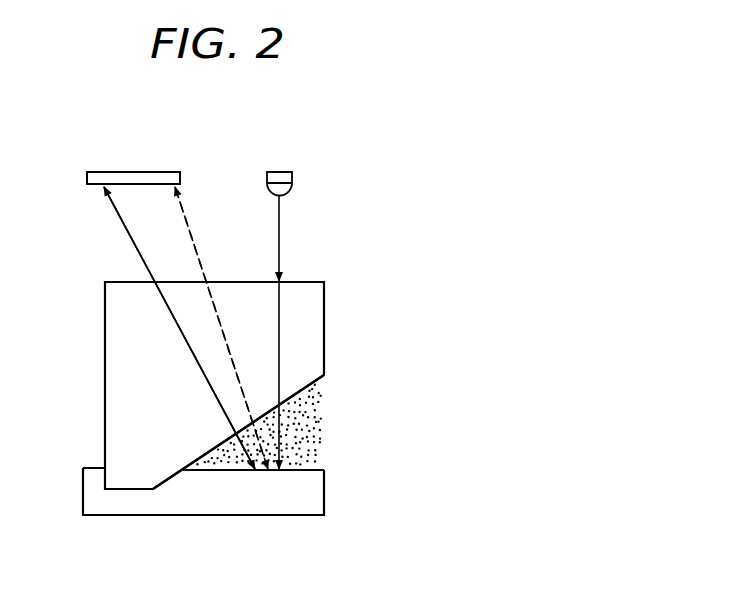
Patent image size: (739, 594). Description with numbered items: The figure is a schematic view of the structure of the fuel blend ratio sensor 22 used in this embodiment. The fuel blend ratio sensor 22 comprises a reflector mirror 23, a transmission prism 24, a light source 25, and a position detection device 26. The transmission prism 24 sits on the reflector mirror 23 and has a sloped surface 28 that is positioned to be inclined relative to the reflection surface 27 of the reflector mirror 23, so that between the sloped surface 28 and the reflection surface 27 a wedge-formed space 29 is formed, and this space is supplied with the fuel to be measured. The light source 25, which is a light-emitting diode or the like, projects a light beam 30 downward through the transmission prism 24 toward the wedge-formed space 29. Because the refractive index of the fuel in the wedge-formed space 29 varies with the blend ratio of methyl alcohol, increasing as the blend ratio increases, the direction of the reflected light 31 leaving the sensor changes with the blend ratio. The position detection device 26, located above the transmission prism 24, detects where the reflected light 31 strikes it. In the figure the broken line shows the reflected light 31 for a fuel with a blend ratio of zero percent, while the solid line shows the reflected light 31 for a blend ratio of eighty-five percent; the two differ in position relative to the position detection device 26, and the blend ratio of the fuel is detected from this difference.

The fuel blend ratio sensor 22 is at (356, 229).
The reflector mirror 23 is at (305, 500).
The transmission prism 24 is at (295, 375).
The light source 25 is at (280, 172).
The position detection device 26 is at (140, 172).
The reflection surface 27 is at (305, 460).
The sloped surface 28 is at (297, 395).
The wedge-formed space 29 is at (312, 430).
The light beam 30 is at (280, 247).
The reflected light 31 is at (128, 233).